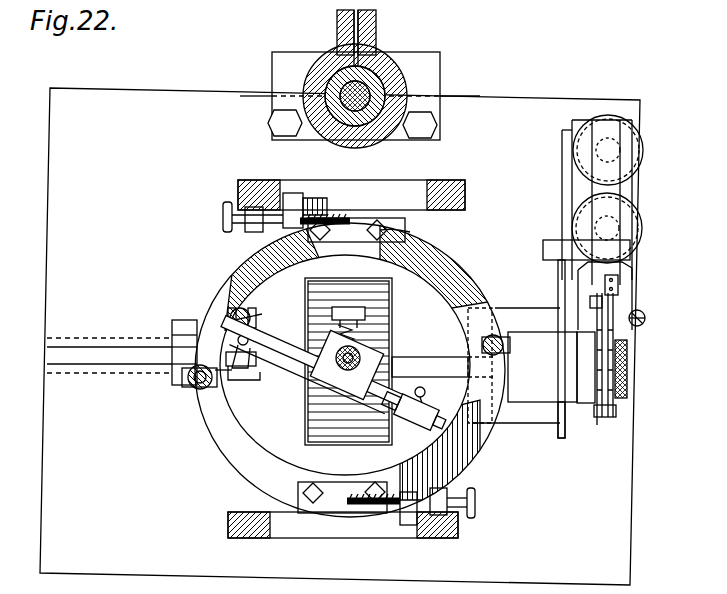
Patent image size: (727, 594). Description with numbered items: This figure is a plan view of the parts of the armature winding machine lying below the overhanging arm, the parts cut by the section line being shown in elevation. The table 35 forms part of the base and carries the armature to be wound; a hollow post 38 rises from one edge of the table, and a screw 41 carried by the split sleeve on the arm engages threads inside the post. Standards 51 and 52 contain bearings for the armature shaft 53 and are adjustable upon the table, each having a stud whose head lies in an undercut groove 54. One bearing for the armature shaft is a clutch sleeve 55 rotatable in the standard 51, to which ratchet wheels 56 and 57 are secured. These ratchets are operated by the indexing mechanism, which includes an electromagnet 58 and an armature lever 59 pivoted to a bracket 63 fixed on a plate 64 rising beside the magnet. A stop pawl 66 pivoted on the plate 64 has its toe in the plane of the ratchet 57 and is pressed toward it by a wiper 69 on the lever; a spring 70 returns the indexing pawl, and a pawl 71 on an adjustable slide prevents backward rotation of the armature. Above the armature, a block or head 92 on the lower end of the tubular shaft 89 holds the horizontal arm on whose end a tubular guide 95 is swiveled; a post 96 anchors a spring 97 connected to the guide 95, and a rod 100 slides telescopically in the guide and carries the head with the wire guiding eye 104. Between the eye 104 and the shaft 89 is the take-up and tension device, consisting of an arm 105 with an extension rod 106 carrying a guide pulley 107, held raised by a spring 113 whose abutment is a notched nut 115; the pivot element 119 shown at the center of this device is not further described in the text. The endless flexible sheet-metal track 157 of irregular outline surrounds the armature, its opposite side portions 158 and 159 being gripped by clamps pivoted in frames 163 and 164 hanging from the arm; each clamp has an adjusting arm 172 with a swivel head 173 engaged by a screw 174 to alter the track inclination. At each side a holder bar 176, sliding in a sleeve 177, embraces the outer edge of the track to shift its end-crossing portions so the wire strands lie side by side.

The table 35 is at (340, 336).
The hollow post 38 is at (390, 82).
The screw 41 is at (335, 80).
The standard 51 is at (505, 305).
The standard 52 is at (184, 322).
The armature shaft 53 is at (422, 362).
The undercut groove 54 is at (100, 345).
The clutch sleeve 55 is at (628, 378).
The ratchet wheel 56 is at (590, 425).
The ratchet wheel 57 is at (612, 415).
The electromagnet 58 is at (622, 160).
The armature lever 59 is at (610, 150).
The bracket 63 is at (625, 255).
The plate 64 is at (565, 188).
The stop pawl 66 is at (615, 305).
The wiper 69 is at (618, 285).
The spring 70 is at (645, 320).
The pawl 71 is at (598, 425).
The tubular shaft 89 is at (427, 388).
The block or head 92 is at (330, 380).
The tubular guide 95 is at (248, 330).
The post 96 is at (405, 420).
The spring 97 is at (350, 418).
The rod 100 is at (235, 312).
The eye 104 is at (215, 380).
The arm 105 is at (318, 345).
The extension rod 106 is at (250, 366).
The guide pulley 107 is at (245, 380).
The spring 113 is at (355, 306).
The nut 115 is at (342, 322).
The pivot 119 is at (360, 352).
The track 157 is at (455, 288).
The side portion of track 158 is at (395, 236).
The side portion of track 159 is at (335, 470).
The frame 163 is at (445, 195).
The frame 164 is at (228, 525).
The adjusting arm 172 is at (305, 205).
The swivel head 173 is at (292, 200).
The screw 174 is at (340, 222).
The holder bar 176 is at (200, 388).
The sleeve 177 is at (186, 374).